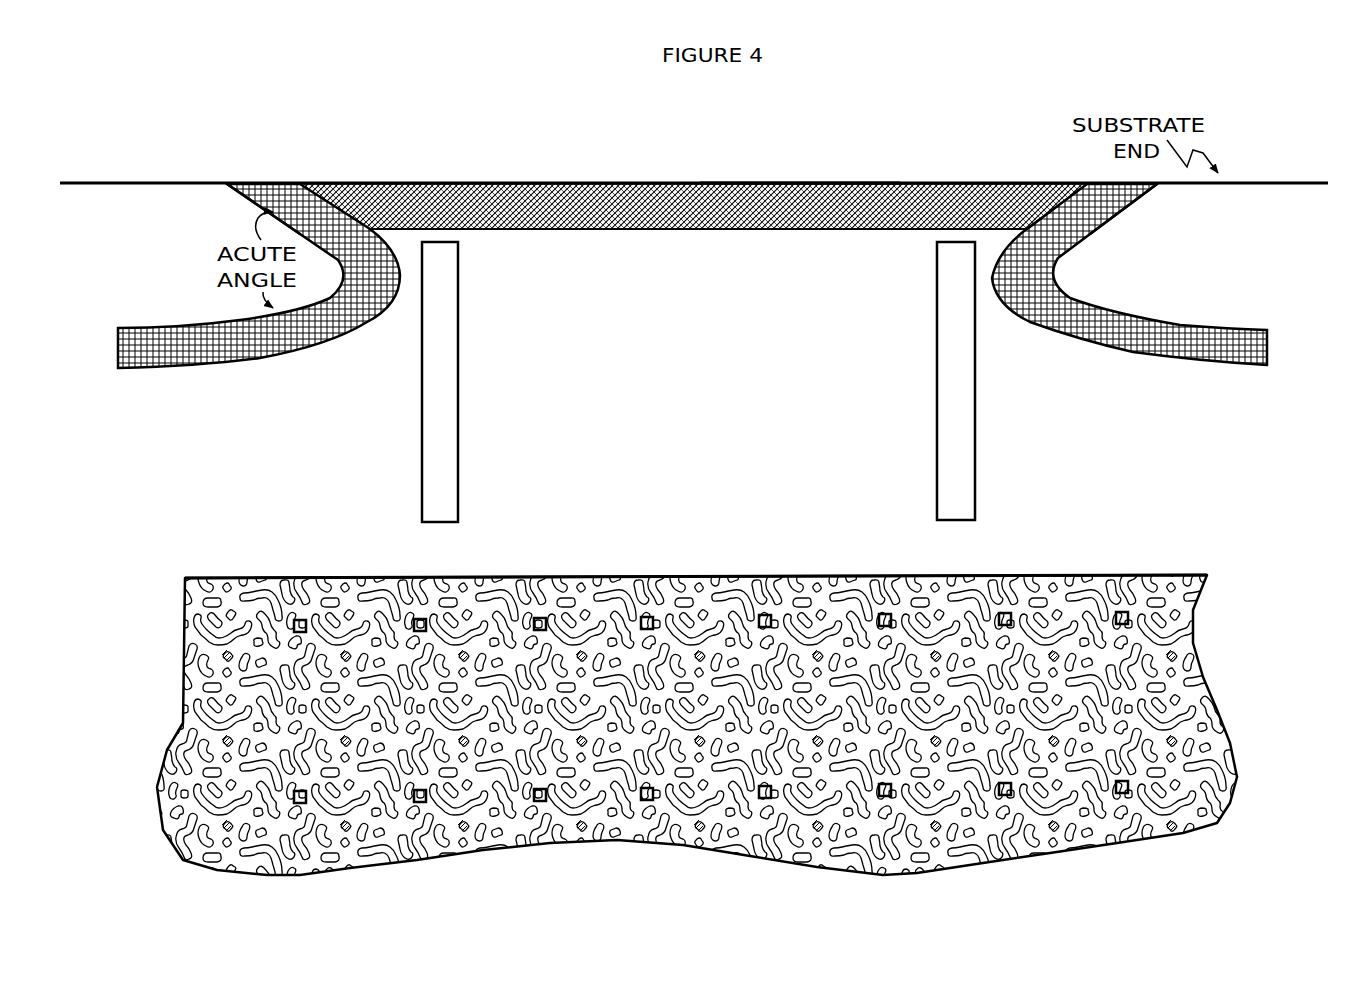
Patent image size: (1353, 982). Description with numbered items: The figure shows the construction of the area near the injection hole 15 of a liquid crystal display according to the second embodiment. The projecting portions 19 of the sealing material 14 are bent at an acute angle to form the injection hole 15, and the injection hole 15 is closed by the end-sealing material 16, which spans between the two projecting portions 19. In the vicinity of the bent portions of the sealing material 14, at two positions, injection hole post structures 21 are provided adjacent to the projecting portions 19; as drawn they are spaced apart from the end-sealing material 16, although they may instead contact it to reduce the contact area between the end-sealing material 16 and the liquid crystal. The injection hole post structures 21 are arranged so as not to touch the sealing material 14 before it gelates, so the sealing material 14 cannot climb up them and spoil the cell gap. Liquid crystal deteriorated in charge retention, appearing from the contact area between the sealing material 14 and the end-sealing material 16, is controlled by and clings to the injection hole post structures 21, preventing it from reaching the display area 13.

The display area 13 is at (940, 574).
The sealing material 14 is at (238, 362).
The injection hole 15 is at (818, 146).
The end-sealing material 16 is at (618, 182).
The projecting portion 19 is at (234, 208).
The injection hole post structure 21 is at (422, 440).